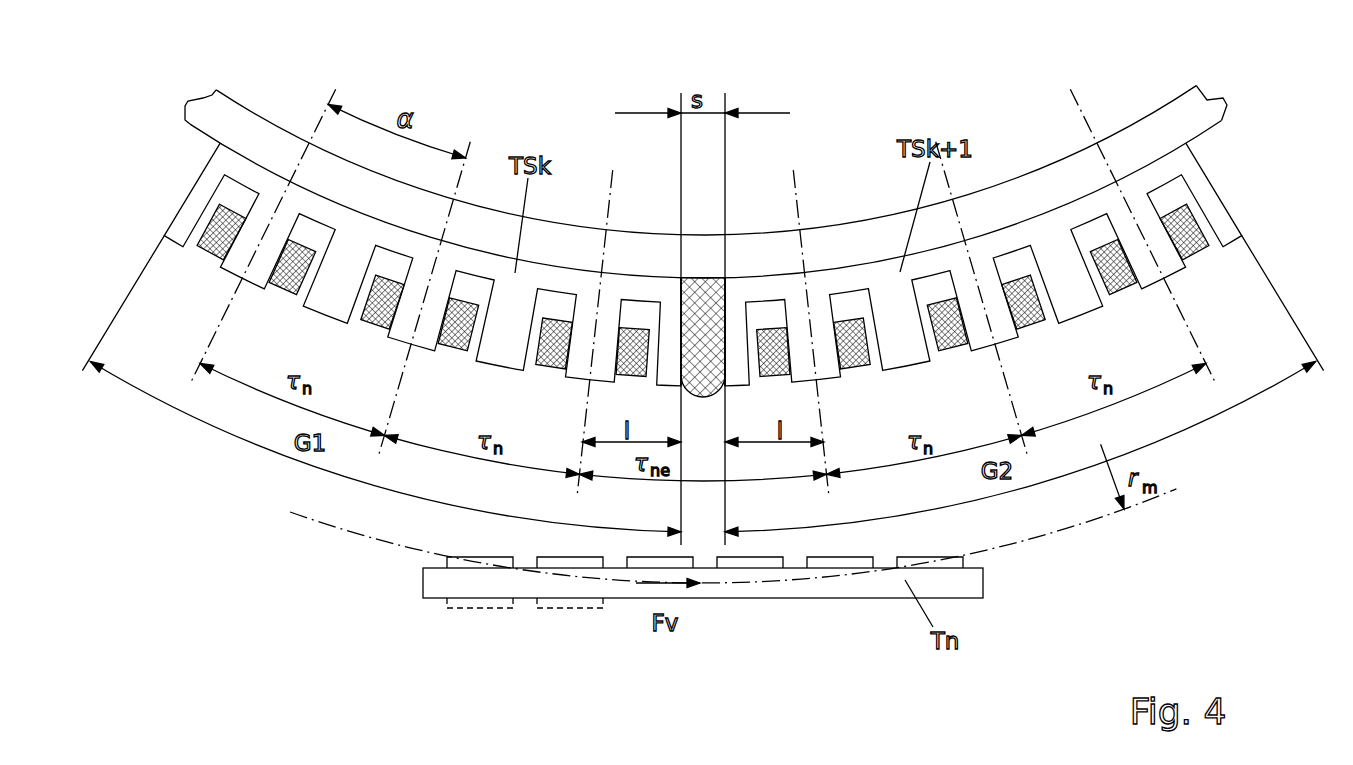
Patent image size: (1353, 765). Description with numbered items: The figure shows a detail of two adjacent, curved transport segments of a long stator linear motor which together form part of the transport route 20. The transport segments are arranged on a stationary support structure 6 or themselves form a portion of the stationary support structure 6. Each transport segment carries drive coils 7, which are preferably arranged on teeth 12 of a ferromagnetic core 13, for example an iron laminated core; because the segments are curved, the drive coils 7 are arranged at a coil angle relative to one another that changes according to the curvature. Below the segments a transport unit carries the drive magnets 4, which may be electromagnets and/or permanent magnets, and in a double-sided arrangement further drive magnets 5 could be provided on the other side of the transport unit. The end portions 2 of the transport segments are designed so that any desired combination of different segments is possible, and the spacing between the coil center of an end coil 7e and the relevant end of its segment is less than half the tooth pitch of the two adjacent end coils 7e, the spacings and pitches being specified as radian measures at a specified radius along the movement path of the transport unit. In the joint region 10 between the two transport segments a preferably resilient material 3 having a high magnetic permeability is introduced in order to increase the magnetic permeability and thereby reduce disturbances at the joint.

The end portions 2 is at (736, 404).
The resilient material 3 is at (700, 330).
The drive magnets 4 is at (500, 567).
The drive magnets 5 is at (450, 602).
The stationary support structure 6 is at (255, 141).
The drive coils 7 is at (212, 258).
The end coil 7e is at (565, 327).
The joint region 10 is at (700, 267).
The teeth 12 is at (1163, 260).
The ferromagnetic core 13 is at (1083, 215).
The transport route 20 is at (1135, 116).